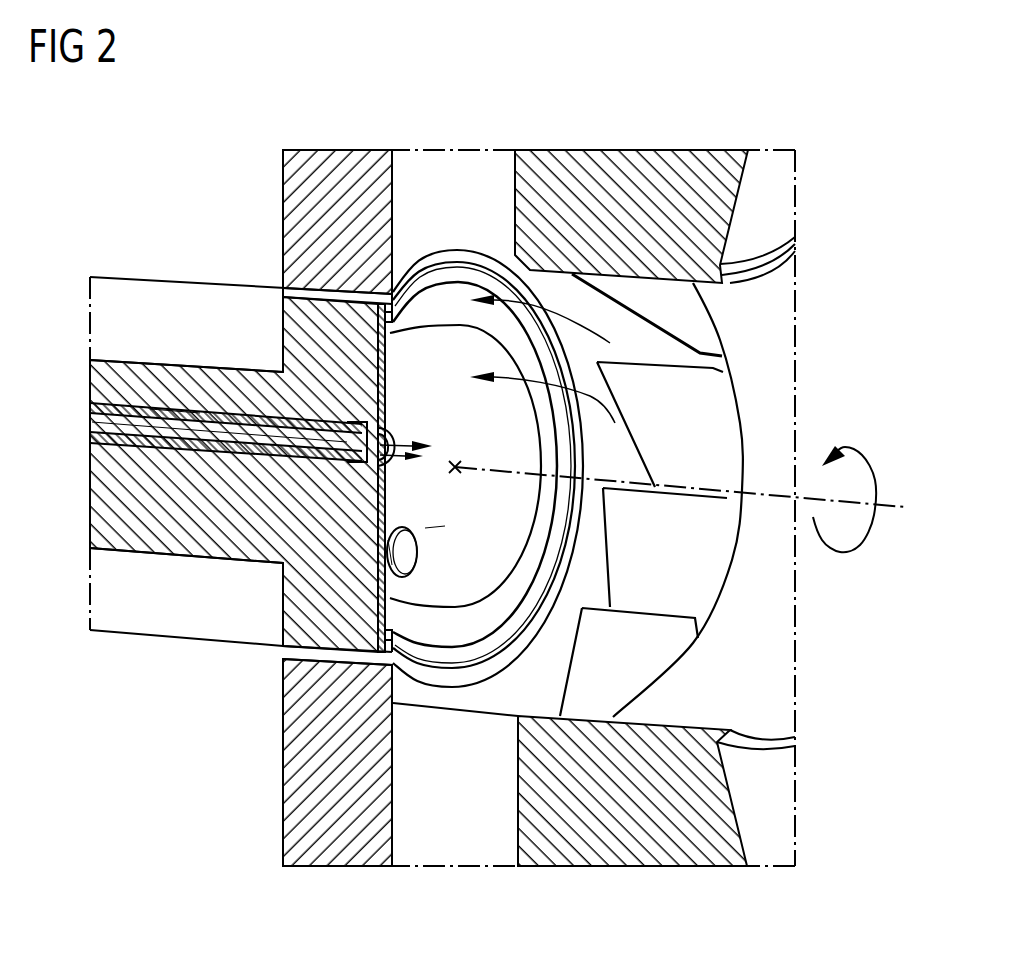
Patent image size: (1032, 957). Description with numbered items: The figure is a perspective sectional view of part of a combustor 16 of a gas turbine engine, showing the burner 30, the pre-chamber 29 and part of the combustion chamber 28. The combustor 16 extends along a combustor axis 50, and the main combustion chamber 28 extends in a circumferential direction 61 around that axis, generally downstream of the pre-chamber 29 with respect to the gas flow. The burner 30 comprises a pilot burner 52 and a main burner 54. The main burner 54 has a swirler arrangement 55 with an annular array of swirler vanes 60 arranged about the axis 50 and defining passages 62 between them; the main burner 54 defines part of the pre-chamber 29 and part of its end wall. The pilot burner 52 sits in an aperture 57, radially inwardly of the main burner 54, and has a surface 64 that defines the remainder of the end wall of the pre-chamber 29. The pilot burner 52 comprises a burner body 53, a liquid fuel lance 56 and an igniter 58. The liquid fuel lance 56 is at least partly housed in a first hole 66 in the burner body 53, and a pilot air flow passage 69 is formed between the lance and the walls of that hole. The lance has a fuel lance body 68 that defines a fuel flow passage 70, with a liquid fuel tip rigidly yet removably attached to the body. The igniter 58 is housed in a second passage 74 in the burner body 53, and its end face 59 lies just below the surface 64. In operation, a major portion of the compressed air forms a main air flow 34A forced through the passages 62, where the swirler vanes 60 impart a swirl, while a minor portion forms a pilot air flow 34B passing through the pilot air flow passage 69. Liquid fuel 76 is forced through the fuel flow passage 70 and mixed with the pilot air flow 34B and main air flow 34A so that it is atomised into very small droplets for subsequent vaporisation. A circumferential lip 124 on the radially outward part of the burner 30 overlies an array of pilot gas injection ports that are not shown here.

The combustor 16 is at (660, 92).
The combustion chamber 28 is at (780, 324).
The pre-chamber 29 is at (552, 687).
The burner 30 is at (450, 166).
The main air flow 34A is at (568, 388).
The pilot air flow 34B is at (418, 523).
The combustor axis 50 is at (893, 508).
The pilot burner 52 is at (150, 290).
The burner body 53 is at (92, 366).
The main burner 54 is at (553, 887).
The swirler arrangement 55 is at (730, 442).
The liquid fuel lance 56 is at (226, 380).
The aperture 57 is at (304, 628).
The igniter 58 is at (420, 553).
The end face 59 is at (438, 528).
The swirler vanes 60 is at (706, 585).
The circumferential direction 61 is at (838, 553).
The passages 62 is at (647, 349).
The surface 64 is at (508, 443).
The first hole 66 is at (92, 442).
The fuel lance body 68 is at (193, 440).
The pilot air flow passage 69 is at (165, 410).
The fuel flow passage 70 is at (92, 408).
The second passage 74 is at (412, 574).
The liquid fuel 76 is at (405, 436).
The circumferential lip 124 is at (452, 280).